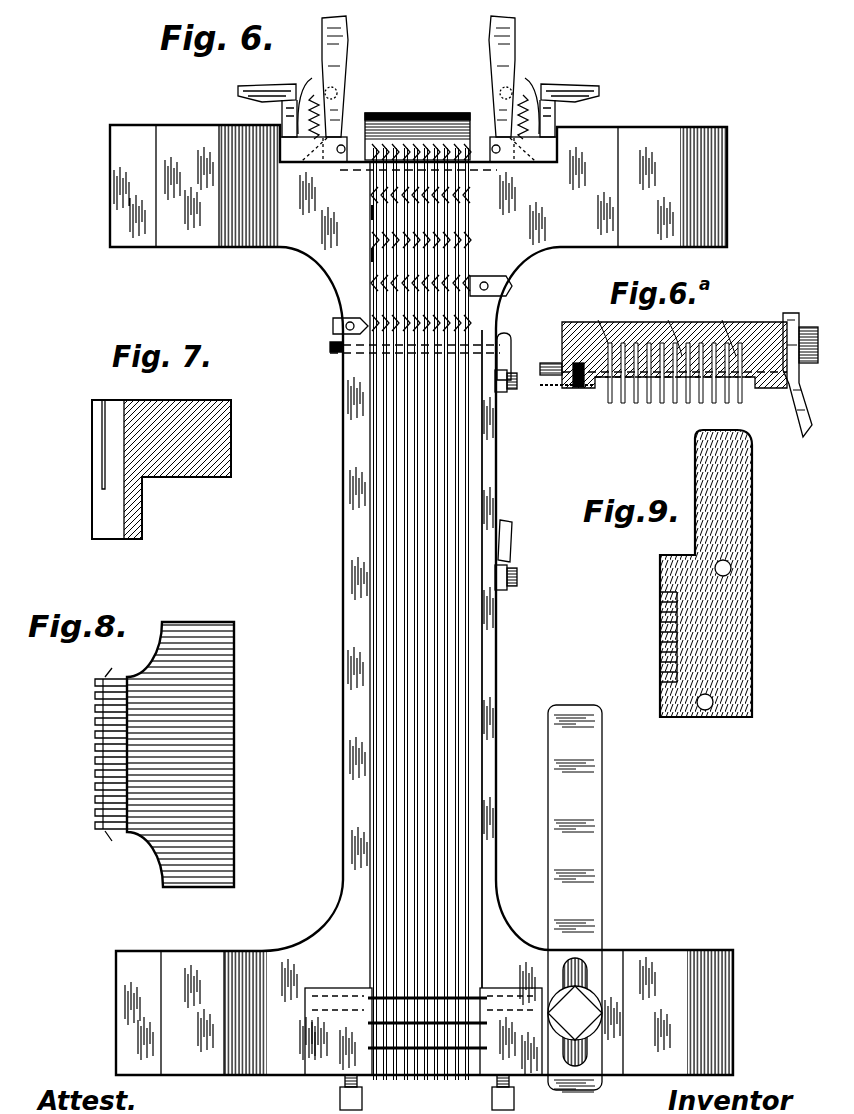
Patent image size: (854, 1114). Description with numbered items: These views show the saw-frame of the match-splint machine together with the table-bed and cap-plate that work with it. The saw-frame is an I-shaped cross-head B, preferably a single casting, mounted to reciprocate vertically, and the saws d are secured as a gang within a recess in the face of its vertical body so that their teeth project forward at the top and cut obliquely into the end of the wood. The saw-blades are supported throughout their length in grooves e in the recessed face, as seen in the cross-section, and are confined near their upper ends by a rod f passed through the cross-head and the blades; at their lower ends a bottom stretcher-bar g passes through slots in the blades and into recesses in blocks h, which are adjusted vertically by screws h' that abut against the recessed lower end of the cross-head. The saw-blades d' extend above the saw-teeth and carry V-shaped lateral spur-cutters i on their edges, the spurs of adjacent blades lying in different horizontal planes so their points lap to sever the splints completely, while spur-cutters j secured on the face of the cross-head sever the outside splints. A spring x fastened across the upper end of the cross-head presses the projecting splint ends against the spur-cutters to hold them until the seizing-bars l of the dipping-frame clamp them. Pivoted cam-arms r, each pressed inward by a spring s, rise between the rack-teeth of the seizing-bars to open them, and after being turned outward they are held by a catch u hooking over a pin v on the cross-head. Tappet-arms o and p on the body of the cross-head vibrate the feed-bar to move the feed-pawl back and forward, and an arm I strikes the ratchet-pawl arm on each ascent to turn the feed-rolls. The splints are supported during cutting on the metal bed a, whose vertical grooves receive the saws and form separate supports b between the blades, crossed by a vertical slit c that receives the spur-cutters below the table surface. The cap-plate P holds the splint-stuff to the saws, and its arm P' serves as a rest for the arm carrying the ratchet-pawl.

In FIG. 6, the I-shaped cross-head B is at (421, 600).
In FIG. 6A, the I-shaped cross-head B is at (745, 332).
In FIG. 6, the spring x is at (532, 326).
In FIG. 6, the cam-arm r is at (418, 89).
In FIG. 6, the spring s is at (418, 104).
In FIG. 6, the catch u is at (418, 83).
In FIG. 6, the pin v is at (420, 118).
In FIG. 6, the rod f is at (409, 262).
In FIG. 6A, the rod f is at (663, 362).
In FIG. 6, the grooves e is at (376, 471).
In FIG. 6A, the grooves e is at (663, 328).
In FIG. 6, the lateral spur-cutters i is at (482, 605).
In FIG. 6A, the lateral spur-cutters i is at (610, 394).
In FIG. 6, the saw-blades d' is at (422, 230).
In FIG. 6, the spur-cutters j is at (422, 294).
In FIG. 6A, the spur-cutters j is at (576, 388).
In FIG. 6, the tappet-arm p is at (511, 356).
In FIG. 6, the tappet-arm o is at (511, 554).
In FIG. 6, the metal bed a is at (470, 642).
In FIG. 6A, the metal bed a is at (649, 396).
In FIG. 7, the metal bed a is at (161, 458).
In FIG. 8, the metal bed a is at (180, 754).
In FIG. 6, the saws d is at (344, 605).
In FIG. 6, the arm I is at (575, 898).
In FIG. 6, the blocks h is at (423, 1031).
In FIG. 6, the bottom stretcher-bar g is at (417, 1027).
In FIG. 6, the screws h' is at (440, 1092).
In FIG. 6A, the splint-seizing bars l is at (801, 375).
In FIG. 7, the supports b is at (98, 426).
In FIG. 8, the supports b is at (96, 683).
In FIG. 7, the vertical slit c is at (104, 410).
In FIG. 8, the vertical slit c is at (112, 754).
In FIG. 9, the cap-plate P is at (706, 573).
In FIG. 9, the arm P' is at (716, 496).